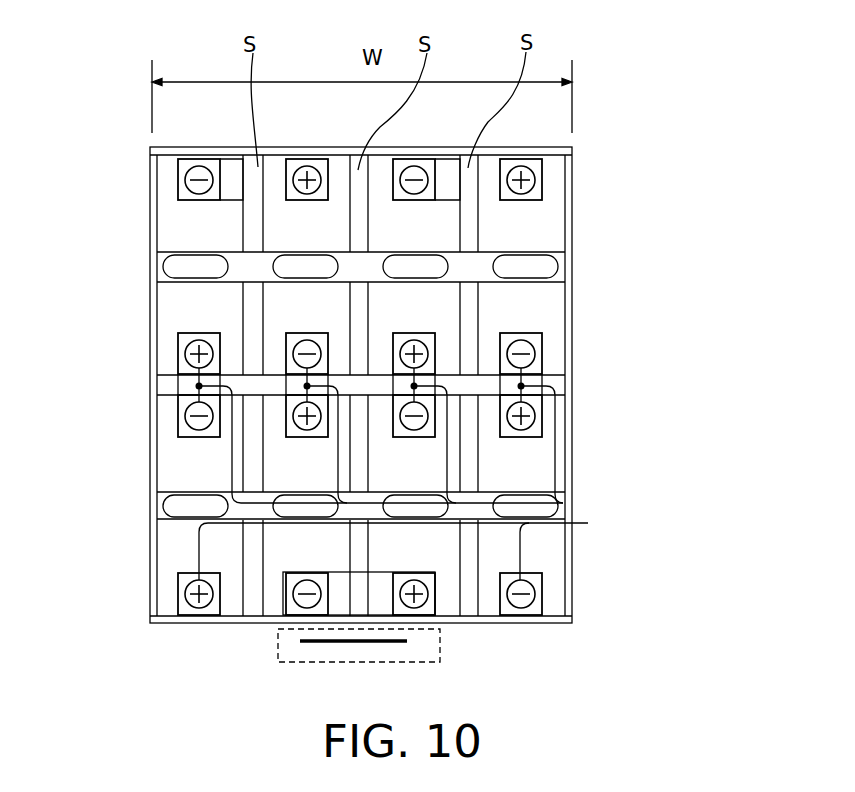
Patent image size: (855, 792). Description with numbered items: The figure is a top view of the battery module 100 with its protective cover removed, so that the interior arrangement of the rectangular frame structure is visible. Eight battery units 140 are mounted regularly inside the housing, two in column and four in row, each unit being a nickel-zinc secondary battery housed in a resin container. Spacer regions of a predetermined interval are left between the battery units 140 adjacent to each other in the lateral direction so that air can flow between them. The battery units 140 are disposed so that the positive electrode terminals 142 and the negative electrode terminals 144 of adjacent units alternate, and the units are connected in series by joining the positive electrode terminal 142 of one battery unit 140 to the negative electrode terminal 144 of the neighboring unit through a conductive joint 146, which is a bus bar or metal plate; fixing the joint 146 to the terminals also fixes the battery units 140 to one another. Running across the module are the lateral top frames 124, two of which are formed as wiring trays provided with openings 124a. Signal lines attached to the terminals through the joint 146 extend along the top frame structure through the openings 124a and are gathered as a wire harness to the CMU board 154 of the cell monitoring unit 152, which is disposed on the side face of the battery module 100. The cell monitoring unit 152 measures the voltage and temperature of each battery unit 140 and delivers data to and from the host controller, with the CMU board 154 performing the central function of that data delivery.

The battery module 100 is at (617, 123).
The lateral top frames 124 is at (535, 150).
The openings 124a is at (173, 510).
The battery units 140 is at (188, 304).
The positive electrode terminal 142 is at (176, 360).
The negative electrode terminal 144 is at (177, 179).
The conductive joint 146 is at (230, 200).
The cell monitoring unit 152 is at (440, 643).
The CMU board 154 is at (302, 642).